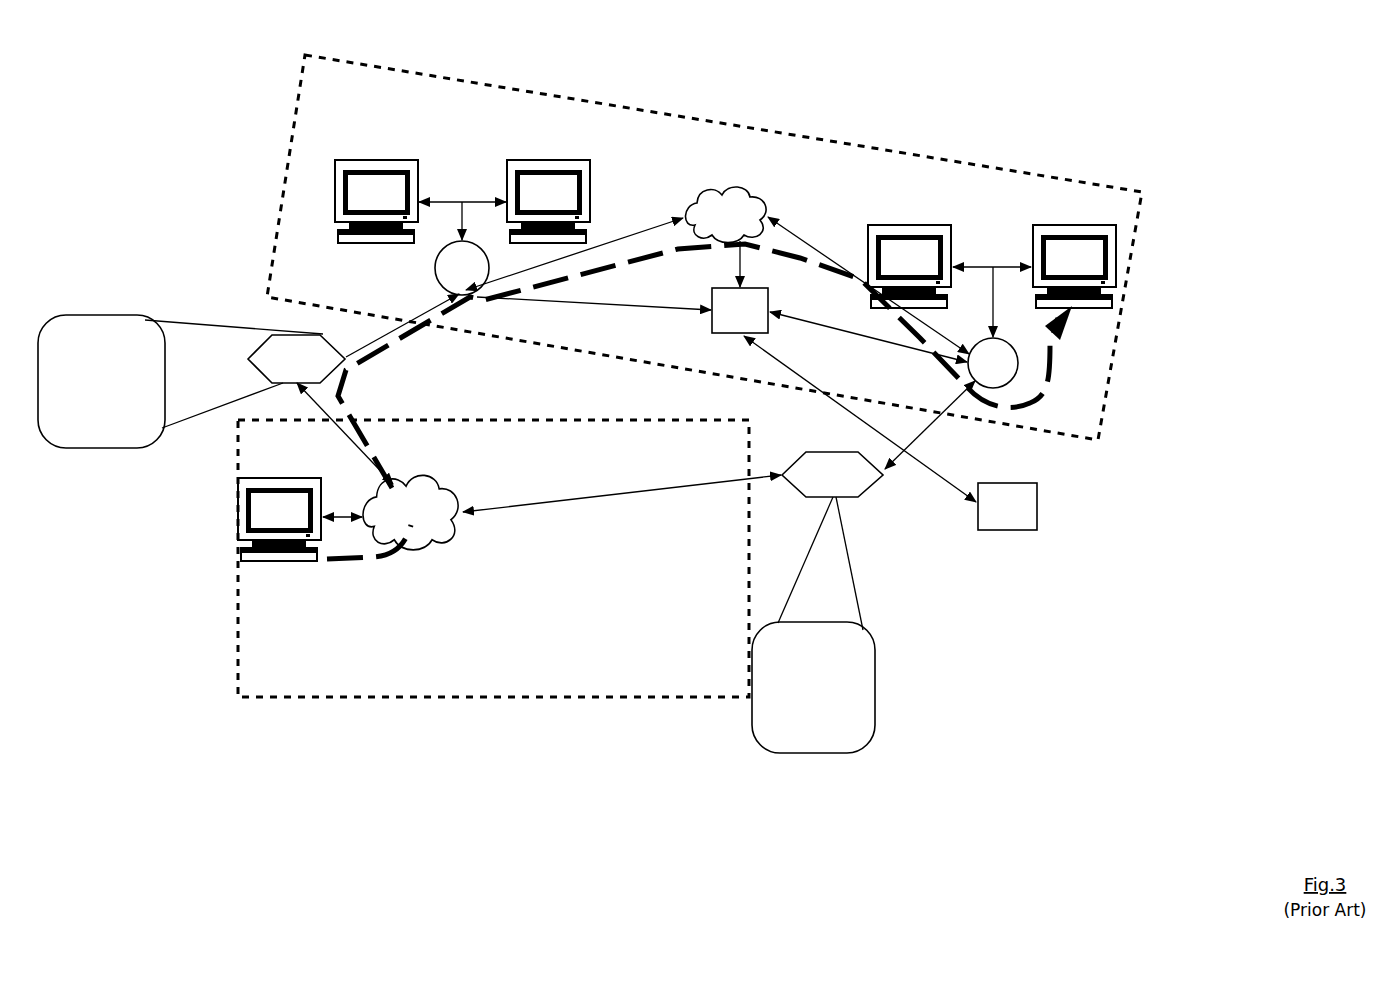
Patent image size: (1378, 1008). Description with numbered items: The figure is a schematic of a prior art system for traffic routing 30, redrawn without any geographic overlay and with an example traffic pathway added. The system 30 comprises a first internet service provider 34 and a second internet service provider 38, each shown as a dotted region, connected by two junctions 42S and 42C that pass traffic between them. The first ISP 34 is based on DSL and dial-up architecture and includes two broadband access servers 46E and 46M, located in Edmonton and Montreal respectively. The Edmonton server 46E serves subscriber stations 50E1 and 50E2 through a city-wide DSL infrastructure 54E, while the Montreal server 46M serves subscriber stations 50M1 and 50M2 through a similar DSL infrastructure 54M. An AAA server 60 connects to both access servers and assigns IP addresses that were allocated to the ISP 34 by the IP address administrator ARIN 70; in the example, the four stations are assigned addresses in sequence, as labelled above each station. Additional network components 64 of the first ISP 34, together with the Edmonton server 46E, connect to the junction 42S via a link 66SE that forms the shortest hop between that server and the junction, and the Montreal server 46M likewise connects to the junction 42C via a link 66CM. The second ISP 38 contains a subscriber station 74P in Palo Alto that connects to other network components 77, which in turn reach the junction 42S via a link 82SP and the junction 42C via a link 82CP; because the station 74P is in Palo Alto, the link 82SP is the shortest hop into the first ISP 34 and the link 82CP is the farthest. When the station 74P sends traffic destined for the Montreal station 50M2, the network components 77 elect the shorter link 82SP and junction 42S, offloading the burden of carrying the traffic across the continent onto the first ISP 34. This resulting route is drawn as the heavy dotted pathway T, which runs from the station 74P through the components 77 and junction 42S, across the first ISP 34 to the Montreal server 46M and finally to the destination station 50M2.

The system for traffic routing 30 is at (317, 770).
The first internet service provider 34 is at (263, 293).
The second internet service provider 38 is at (238, 600).
The junction 42S is at (296, 359).
The junction 42C is at (832, 474).
The broadband access server 46E is at (462, 268).
The broadband access server 46M is at (993, 363).
The subscriber station 50E1 is at (376, 190).
The subscriber station 50E2 is at (548, 190).
The subscriber station 50M1 is at (909, 254).
The subscriber station 50M2 is at (1074, 255).
The city-wide DSL infrastructure 54E is at (452, 196).
The city-wide DSL infrastructure 54M is at (970, 266).
The AAA server 60 is at (740, 287).
The network components 64 is at (809, 320).
The link 66SE is at (394, 333).
The link 66CM is at (926, 429).
The IP address administrator (ARIN) 70 is at (890, 433).
The subscriber station 74P is at (280, 535).
The network components 77 is at (390, 512).
The link 82SP is at (380, 460).
The link 82CP is at (531, 506).
The traffic pathway T is at (780, 247).